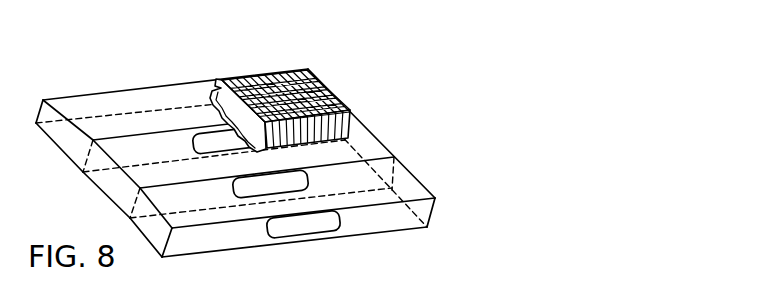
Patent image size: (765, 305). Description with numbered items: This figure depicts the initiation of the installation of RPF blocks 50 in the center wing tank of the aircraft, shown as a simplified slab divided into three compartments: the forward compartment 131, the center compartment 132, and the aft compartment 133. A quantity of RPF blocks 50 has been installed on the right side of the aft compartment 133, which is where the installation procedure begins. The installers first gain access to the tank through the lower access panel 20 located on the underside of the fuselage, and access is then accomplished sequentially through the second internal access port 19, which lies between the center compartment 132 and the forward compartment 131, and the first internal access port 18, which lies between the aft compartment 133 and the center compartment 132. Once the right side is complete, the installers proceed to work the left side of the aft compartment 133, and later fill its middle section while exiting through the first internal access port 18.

The first internal access port 18 is at (196, 140).
The second internal access port 19 is at (234, 194).
The lower access panel 20 is at (270, 233).
The RPF blocks 50 is at (266, 103).
The forward compartment 131 is at (417, 187).
The center compartment 132 is at (380, 147).
The aft compartment 133 is at (333, 88).